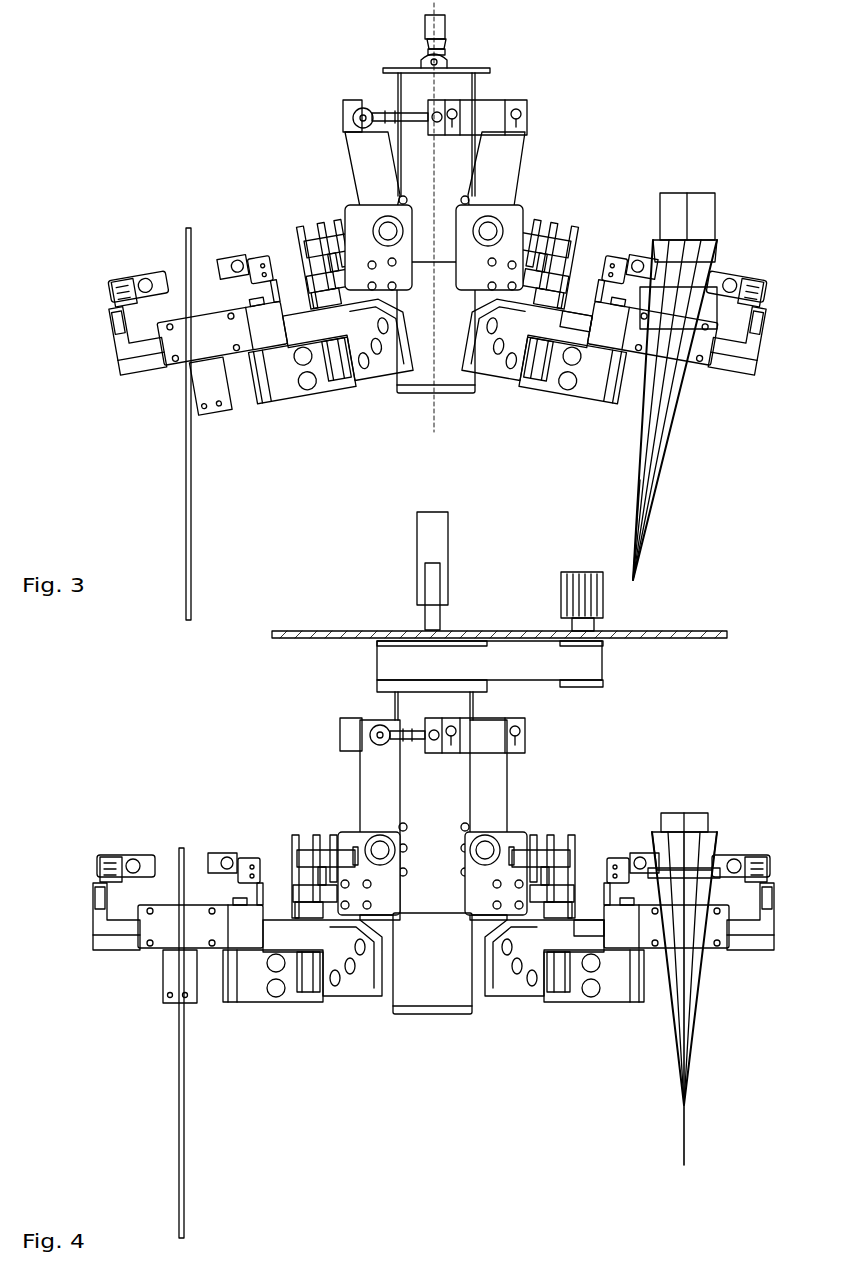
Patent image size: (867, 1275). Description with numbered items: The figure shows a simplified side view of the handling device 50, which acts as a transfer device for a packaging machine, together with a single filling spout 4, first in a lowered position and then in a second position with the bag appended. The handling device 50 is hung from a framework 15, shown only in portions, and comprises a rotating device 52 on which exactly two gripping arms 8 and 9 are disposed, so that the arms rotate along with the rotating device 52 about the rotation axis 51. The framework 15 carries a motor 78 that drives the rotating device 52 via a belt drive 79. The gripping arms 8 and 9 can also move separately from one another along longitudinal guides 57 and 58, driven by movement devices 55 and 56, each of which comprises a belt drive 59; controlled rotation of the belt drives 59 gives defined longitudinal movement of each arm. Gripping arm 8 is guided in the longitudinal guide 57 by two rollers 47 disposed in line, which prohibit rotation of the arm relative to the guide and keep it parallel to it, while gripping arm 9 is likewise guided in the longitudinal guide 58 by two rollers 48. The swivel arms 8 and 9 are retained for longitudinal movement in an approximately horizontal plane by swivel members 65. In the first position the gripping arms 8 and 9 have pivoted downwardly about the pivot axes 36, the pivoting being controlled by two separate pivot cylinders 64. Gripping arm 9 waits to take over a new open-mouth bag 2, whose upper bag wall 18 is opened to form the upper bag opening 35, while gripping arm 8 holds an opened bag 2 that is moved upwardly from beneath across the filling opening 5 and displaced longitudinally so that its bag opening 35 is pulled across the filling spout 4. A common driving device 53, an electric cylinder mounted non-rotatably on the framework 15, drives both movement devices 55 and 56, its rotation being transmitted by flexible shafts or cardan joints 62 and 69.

In FIG. 3, the open-mouth bag 2 is at (665, 485).
In FIG. 4, the open-mouth bag 2 is at (692, 1067).
In FIG. 3, the filling spout 4 is at (712, 207).
In FIG. 4, the filling spout 4 is at (690, 815).
In FIG. 3, the filling opening 5 is at (720, 250).
In FIG. 4, the filling opening 5 is at (684, 851).
In FIG. 3, the gripping arm 8 is at (745, 285).
In FIG. 4, the gripping arm 8 is at (748, 855).
In FIG. 3, the gripping arm 9 is at (128, 272).
In FIG. 4, the gripping arm 9 is at (118, 838).
In FIG. 4, the framework 15 is at (710, 633).
In FIG. 3, the upper bag wall 18 is at (655, 252).
In FIG. 3, the bag opening 35 is at (745, 262).
In FIG. 4, the bag opening 35 is at (660, 822).
In FIG. 3, the pivot axes 36 is at (470, 238).
In FIG. 4, the pivot axes 36 is at (480, 850).
In FIG. 3, the rollers 47 is at (548, 340).
In FIG. 4, the rollers 47 is at (540, 920).
In FIG. 3, the rollers 48 is at (275, 300).
In FIG. 4, the rollers 48 is at (300, 920).
In FIG. 3, the handling device 50 is at (192, 75).
In FIG. 3, the rotation axis 51 is at (425, 407).
In FIG. 3, the rotating device 52 is at (482, 63).
In FIG. 4, the rotating device 52 is at (352, 706).
In FIG. 4, the driving device 53 is at (415, 573).
In FIG. 3, the movement device 55 is at (562, 238).
In FIG. 4, the movement device 55 is at (545, 860).
In FIG. 3, the movement device 56 is at (318, 220).
In FIG. 3, the longitudinal guide 57 is at (575, 252).
In FIG. 3, the longitudinal guide 58 is at (305, 252).
In FIG. 4, the belt drive 59 is at (560, 880).
In FIG. 3, the flexible shaft or cardan joint 62 is at (330, 218).
In FIG. 4, the flexible shaft or cardan joint 62 is at (345, 835).
In FIG. 3, the pivot cylinder 64 is at (392, 103).
In FIG. 4, the swivel members 65 is at (315, 1010).
In FIG. 3, the flexible shaft or cardan joint 69 is at (535, 226).
In FIG. 4, the flexible shaft or cardan joint 69 is at (520, 860).
In FIG. 4, the motor 78 is at (561, 601).
In FIG. 4, the belt drive 79 is at (517, 668).